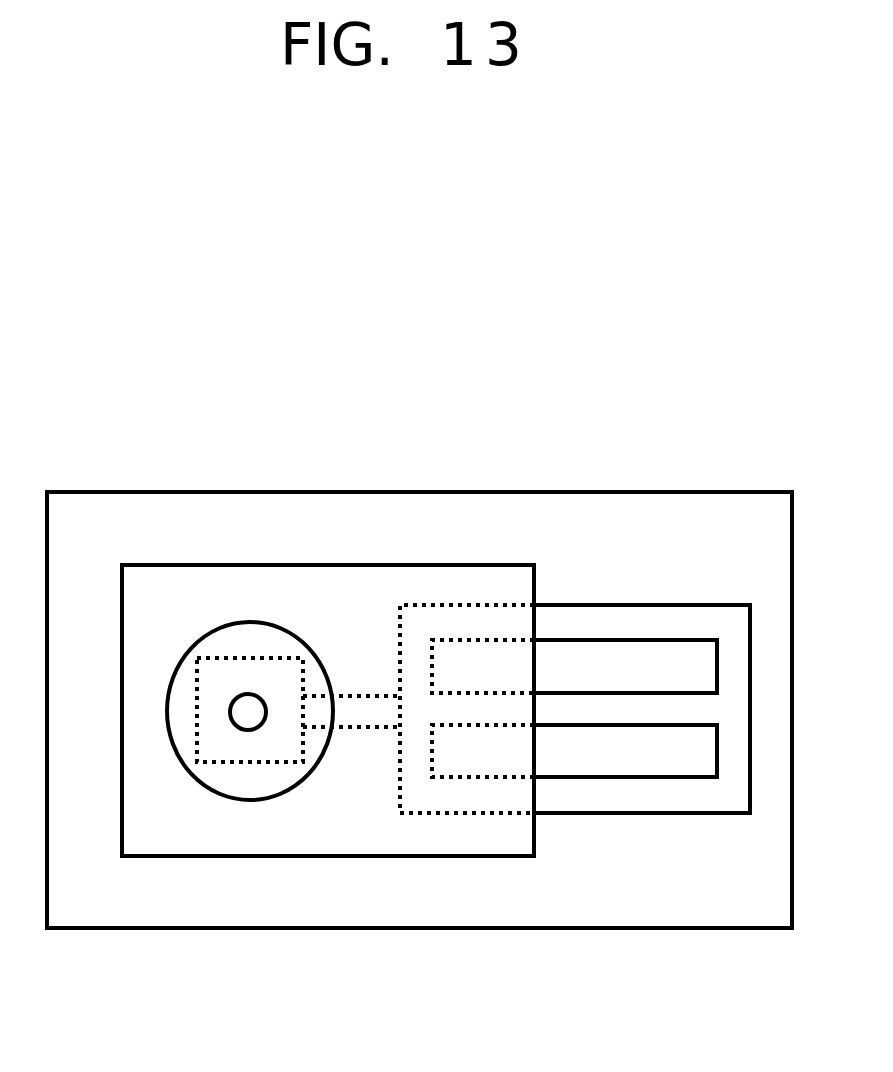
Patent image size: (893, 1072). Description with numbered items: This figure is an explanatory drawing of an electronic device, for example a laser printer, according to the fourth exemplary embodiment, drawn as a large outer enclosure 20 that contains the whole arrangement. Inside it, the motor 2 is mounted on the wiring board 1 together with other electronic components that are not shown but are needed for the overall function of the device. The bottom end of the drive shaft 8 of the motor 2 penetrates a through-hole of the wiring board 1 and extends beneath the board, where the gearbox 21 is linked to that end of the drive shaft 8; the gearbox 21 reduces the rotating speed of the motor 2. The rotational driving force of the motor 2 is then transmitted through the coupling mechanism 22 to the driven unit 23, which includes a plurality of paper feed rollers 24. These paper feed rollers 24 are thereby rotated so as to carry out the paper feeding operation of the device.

The substrate 20 is at (113, 517).
The wiring board 1 is at (207, 588).
The motor 2 is at (278, 639).
The drive shaft 8 is at (247, 707).
The gearbox 21 is at (271, 752).
The coupling mechanism 22 is at (358, 713).
The driven unit 23 is at (562, 602).
The paper feed rollers 24 is at (679, 668).